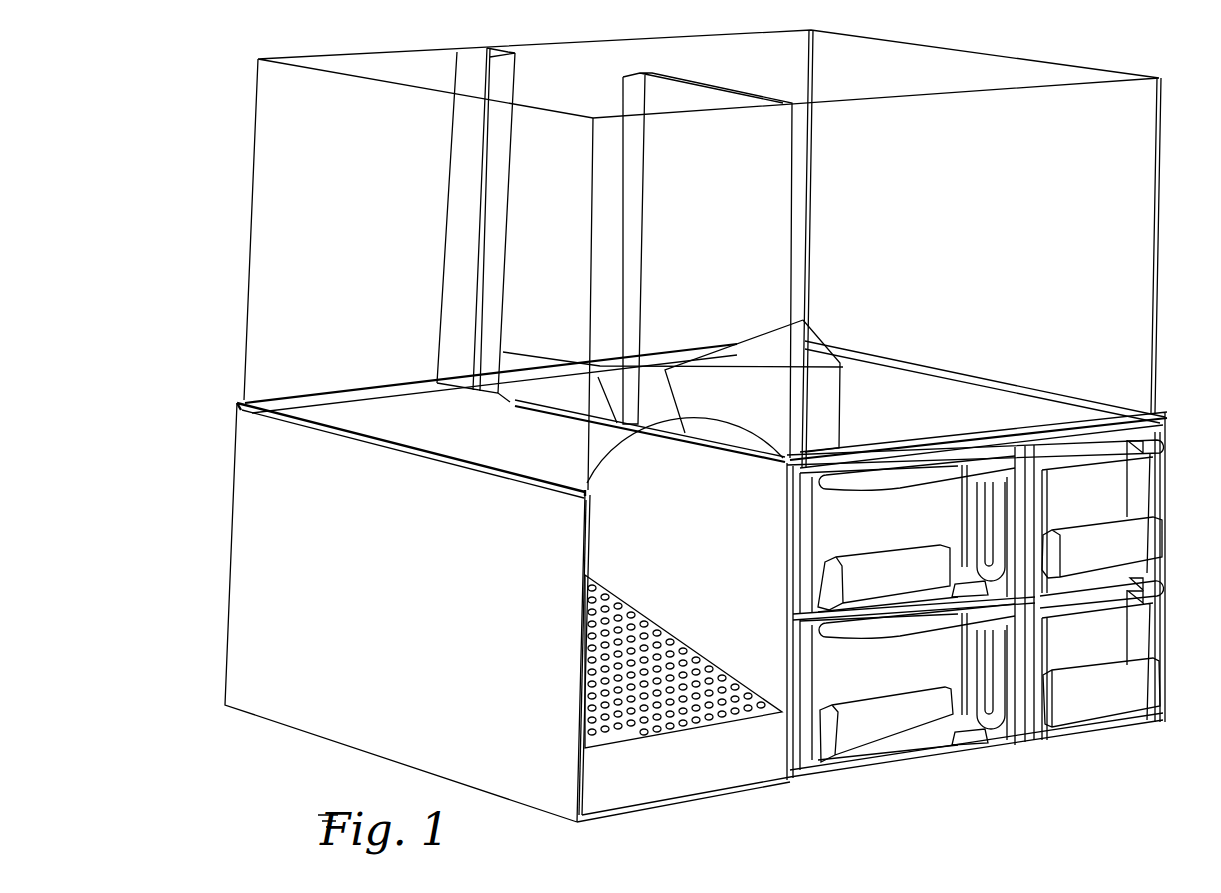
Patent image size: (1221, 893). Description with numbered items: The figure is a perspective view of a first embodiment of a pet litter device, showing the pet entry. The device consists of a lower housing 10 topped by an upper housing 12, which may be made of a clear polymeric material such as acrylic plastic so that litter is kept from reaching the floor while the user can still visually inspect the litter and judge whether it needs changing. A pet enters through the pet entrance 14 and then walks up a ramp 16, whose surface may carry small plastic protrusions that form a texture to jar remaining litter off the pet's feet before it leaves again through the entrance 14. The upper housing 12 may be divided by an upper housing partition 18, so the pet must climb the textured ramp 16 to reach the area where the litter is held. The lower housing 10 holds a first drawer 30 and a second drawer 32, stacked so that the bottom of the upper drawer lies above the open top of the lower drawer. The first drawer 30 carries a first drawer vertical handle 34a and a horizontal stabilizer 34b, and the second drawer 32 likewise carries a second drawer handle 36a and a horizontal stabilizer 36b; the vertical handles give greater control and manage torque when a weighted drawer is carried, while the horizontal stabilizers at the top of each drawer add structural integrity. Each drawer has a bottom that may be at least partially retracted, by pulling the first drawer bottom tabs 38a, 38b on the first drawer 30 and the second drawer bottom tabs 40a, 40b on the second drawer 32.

The lower housing 10 is at (238, 506).
The upper housing 12 is at (258, 356).
The pet entrance 14 is at (751, 652).
The ramp 16 is at (662, 727).
The upper housing partition 18 is at (688, 83).
The first drawer 30 is at (1004, 511).
The second drawer 32 is at (1004, 659).
The first drawer vertical handle 34a is at (1016, 507).
The horizontal stabilizer 34b is at (1162, 440).
The second drawer handle 36a is at (1010, 652).
The horizontal stabilizer 36b is at (1163, 583).
The first drawer bottom tab 38a is at (868, 562).
The first drawer bottom tab 38b is at (1077, 530).
The second drawer bottom tab 40a is at (865, 703).
The second drawer bottom tab 40b is at (1063, 672).